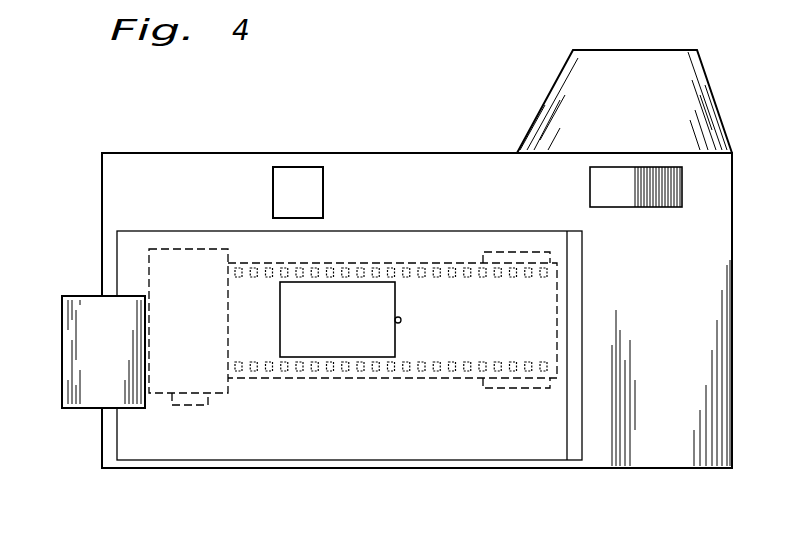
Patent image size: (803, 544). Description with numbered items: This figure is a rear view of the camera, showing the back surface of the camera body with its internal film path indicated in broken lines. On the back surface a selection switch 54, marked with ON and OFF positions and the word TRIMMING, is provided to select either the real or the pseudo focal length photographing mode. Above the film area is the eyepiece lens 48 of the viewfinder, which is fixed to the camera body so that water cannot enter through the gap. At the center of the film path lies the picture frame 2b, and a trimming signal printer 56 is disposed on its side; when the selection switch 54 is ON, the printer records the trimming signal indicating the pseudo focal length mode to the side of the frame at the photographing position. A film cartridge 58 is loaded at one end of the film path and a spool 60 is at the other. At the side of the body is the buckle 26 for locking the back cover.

The picture frame 2b is at (280, 328).
The buckle 26 is at (73, 310).
The eyepiece lens 48 is at (286, 185).
The selection switch 54 is at (650, 167).
The trimming signal printer 56 is at (401, 321).
The film cartridge 58 is at (171, 249).
The spool 60 is at (541, 388).